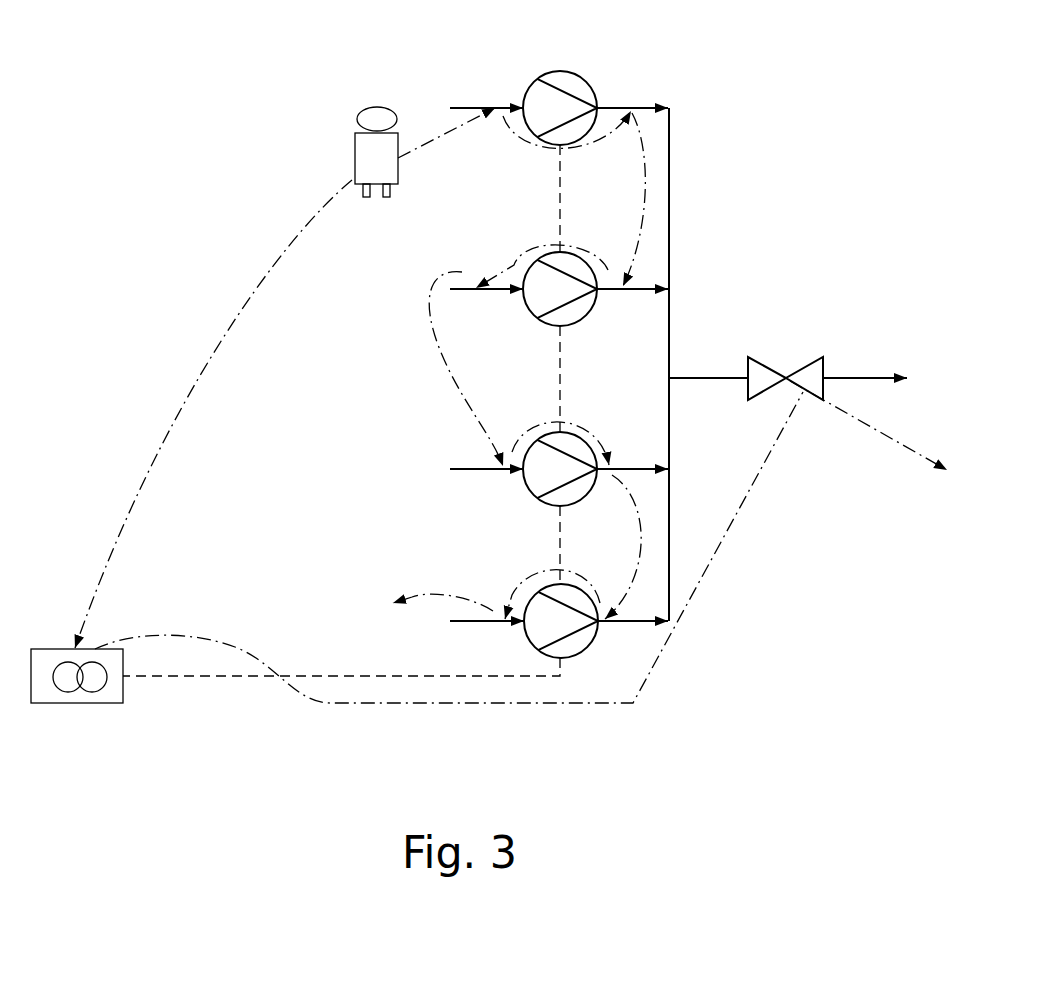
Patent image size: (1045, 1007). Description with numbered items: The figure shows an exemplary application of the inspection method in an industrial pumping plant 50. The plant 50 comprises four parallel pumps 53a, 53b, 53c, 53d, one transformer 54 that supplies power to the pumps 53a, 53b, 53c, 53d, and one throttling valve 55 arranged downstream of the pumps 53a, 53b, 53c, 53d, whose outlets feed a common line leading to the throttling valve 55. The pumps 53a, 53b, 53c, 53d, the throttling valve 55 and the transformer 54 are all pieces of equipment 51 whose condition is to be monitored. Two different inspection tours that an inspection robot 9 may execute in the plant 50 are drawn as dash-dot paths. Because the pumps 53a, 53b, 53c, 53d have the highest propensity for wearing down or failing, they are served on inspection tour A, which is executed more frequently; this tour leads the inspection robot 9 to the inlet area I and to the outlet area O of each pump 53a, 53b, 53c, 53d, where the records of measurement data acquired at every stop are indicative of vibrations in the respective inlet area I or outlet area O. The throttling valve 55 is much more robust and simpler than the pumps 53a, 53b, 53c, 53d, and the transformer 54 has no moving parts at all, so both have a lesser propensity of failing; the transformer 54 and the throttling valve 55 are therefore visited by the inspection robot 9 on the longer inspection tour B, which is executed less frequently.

The inspection robot 9 is at (370, 170).
The pumping plant 50 is at (772, 102).
The pieces of equipment 51 is at (515, 350).
The pump 53a is at (588, 78).
The pump 53b is at (577, 252).
The pump 53c is at (575, 432).
The pump 53d is at (580, 585).
The transformer 54 is at (77, 705).
The throttling valve 55 is at (763, 367).
The inspection tour A is at (437, 143).
The inspection tour B is at (150, 438).
The inlet area I is at (481, 106).
The outlet area O is at (648, 106).